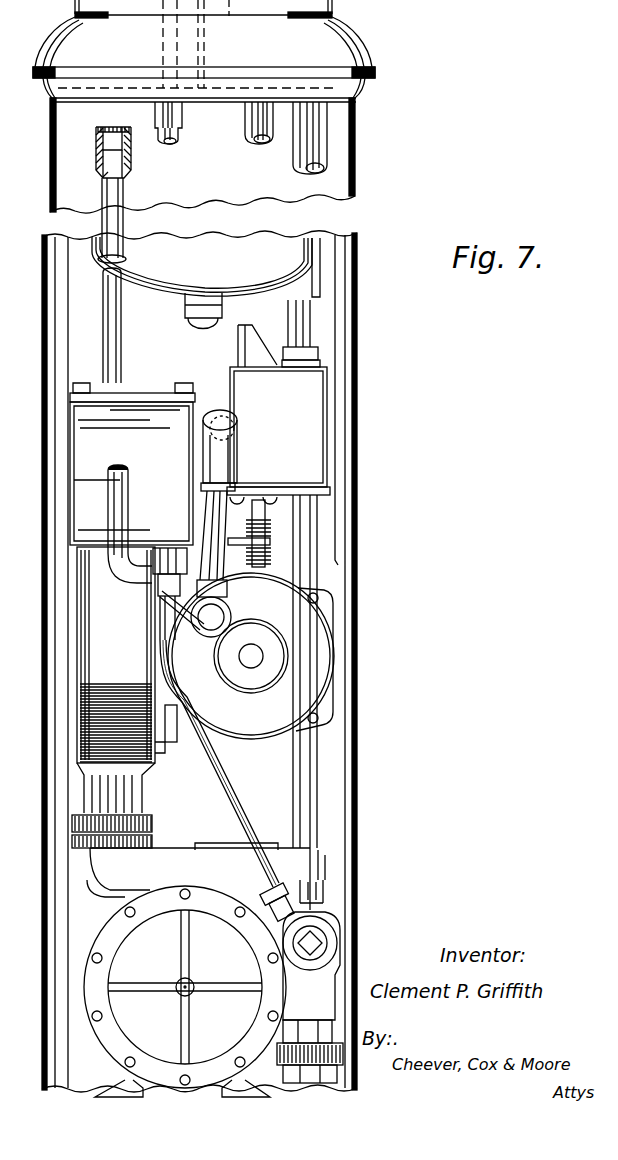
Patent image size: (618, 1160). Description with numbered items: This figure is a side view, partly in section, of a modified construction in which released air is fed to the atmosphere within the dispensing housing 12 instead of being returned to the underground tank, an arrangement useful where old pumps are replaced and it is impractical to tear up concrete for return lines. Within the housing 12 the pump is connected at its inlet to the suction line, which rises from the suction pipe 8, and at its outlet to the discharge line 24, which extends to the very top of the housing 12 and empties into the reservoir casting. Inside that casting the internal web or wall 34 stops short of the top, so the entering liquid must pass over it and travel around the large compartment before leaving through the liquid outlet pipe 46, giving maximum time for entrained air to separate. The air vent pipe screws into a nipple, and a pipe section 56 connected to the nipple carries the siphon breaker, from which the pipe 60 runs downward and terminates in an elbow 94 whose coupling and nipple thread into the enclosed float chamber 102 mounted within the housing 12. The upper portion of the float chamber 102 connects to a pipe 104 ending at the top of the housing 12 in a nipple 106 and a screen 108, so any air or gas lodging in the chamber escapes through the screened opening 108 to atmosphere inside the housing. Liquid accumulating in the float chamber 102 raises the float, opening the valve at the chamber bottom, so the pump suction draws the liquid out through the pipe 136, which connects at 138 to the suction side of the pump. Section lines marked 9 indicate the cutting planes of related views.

The liquid or gasoline suction pipe 8 is at (152, 645).
The section line 9- 9 is at (35, 399).
The housing 12 is at (357, 275).
The discharge line 24 is at (320, 145).
The internal web or wall 34 is at (205, 53).
The liquid or gasoline outlet pipe 46 is at (253, 127).
The pipe section 56 is at (172, 140).
The pipe 60 is at (122, 500).
The elbow 94 is at (142, 590).
The float chamber 102 is at (132, 464).
The pipe 104 is at (106, 315).
The nipple 106 is at (103, 143).
The screen 108 is at (108, 128).
The pipe 136 is at (216, 783).
The connection to suction side of pump 138 is at (302, 903).